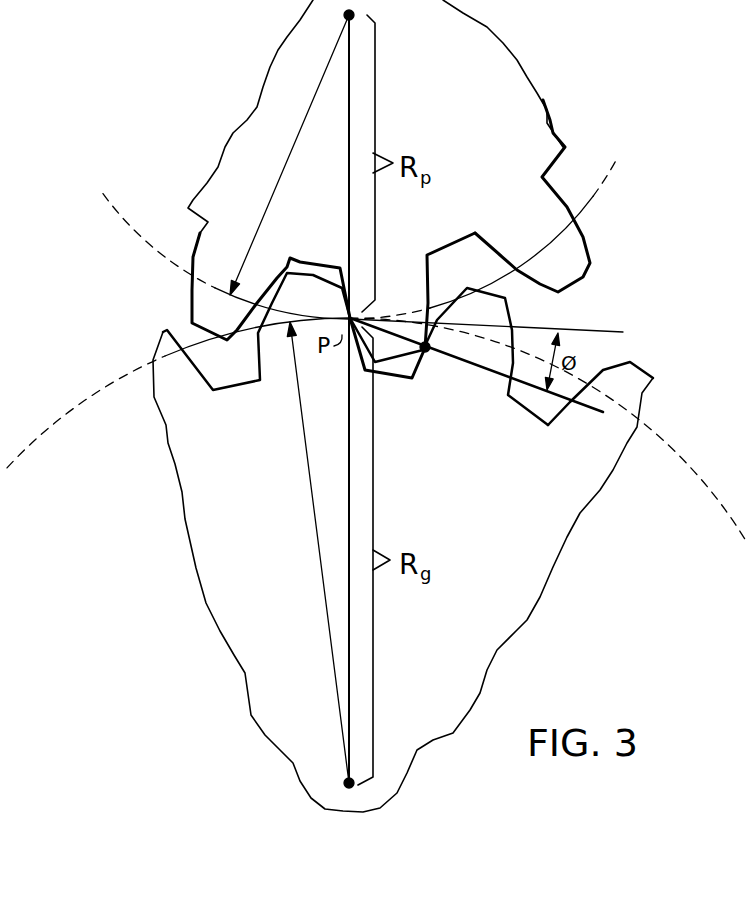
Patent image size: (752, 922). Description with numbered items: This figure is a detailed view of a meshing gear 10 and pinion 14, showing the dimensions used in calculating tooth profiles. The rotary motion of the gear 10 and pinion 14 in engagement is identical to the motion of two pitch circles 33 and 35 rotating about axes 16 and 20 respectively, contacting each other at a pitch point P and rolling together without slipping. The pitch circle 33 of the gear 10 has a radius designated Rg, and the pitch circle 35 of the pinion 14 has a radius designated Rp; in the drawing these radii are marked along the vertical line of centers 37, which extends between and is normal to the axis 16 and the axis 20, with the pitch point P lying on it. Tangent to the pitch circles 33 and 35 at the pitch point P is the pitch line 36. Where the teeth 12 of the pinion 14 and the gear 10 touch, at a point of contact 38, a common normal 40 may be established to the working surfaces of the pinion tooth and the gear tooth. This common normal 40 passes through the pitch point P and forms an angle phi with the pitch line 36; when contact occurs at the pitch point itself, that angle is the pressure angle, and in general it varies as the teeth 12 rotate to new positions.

The gear 10 is at (248, 668).
The teeth 12 is at (588, 279).
The pinion 14 is at (285, 50).
The axis 16 is at (343, 782).
The axis 20 is at (360, 12).
The pitch circle 33 is at (108, 386).
The pitch circle 35 is at (168, 258).
The pitch line 36 is at (597, 330).
The line of centers 37 is at (347, 523).
The point of contact 38 is at (428, 350).
The common normal 40 is at (482, 373).